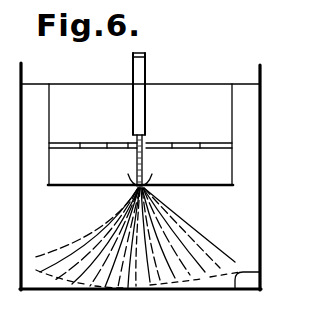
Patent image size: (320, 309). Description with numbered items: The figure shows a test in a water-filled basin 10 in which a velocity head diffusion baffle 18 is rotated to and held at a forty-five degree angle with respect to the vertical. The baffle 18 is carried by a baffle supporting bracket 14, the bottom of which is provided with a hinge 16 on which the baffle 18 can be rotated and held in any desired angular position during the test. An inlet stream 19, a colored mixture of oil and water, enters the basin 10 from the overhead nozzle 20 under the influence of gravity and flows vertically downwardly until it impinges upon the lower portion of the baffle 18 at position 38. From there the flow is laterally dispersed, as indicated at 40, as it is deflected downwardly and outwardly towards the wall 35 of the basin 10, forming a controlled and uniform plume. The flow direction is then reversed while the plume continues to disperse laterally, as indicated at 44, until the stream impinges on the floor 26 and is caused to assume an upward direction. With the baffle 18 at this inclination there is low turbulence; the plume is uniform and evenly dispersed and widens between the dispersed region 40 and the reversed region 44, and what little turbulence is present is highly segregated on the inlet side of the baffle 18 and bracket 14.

The basin 10 is at (261, 123).
The baffle supporting bracket 14 is at (88, 118).
The hinge 16 is at (162, 143).
The velocity head diffusion baffle 18 is at (211, 174).
The inlet stream 19 is at (124, 153).
The nozzle 20 is at (146, 68).
The floor 26 is at (250, 272).
The wall 35 is at (22, 213).
The position of impingement on baffle 38 is at (131, 176).
The laterally dispersed flow 40 is at (142, 209).
The reversed, laterally dispersing flow 44 is at (153, 266).